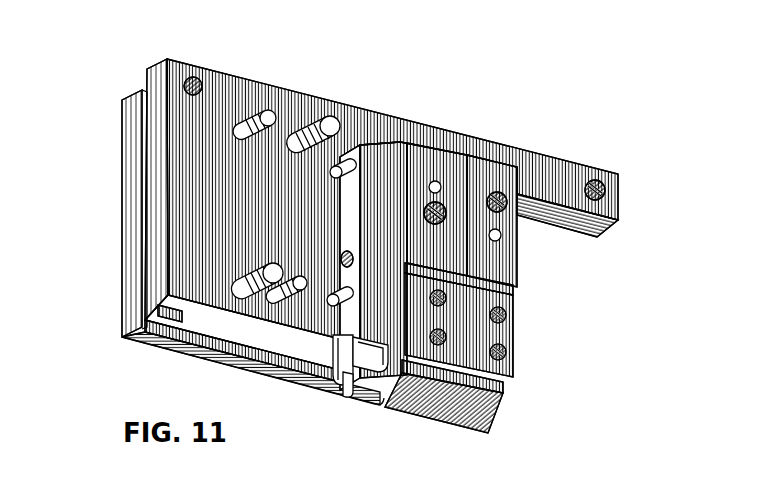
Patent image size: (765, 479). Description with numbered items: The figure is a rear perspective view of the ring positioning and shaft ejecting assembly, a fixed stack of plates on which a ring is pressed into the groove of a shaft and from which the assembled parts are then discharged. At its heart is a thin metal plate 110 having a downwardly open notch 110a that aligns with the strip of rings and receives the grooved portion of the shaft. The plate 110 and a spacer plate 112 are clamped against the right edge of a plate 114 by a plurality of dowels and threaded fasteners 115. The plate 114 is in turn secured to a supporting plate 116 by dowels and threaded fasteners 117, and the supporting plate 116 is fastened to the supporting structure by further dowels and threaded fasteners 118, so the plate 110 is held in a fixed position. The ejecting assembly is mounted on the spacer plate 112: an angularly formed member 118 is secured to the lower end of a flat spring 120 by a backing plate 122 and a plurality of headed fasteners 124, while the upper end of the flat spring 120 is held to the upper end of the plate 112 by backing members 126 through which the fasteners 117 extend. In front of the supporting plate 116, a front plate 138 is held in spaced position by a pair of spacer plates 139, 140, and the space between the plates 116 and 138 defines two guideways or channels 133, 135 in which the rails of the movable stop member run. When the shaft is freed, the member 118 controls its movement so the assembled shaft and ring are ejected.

The thin metal plate 110 is at (326, 364).
The downwardly open notch 110a is at (353, 386).
The spacer plate 112 is at (362, 152).
The plate 114 is at (396, 148).
The dowels and threaded fasteners 115 is at (338, 166).
The supporting plate 116 is at (251, 83).
The dowels and threaded fasteners 117 is at (440, 200).
The angularly formed member 118 is at (277, 111).
The flat spring 120 is at (499, 299).
The backing plate 122 is at (506, 372).
The headed fasteners 124 is at (505, 312).
The backing members 126 is at (418, 142).
The guideway 133 is at (362, 398).
The guideway 135 is at (150, 328).
The front plate 138 is at (132, 159).
The spacer plate 139 is at (207, 333).
The spacer plate 140 is at (500, 410).